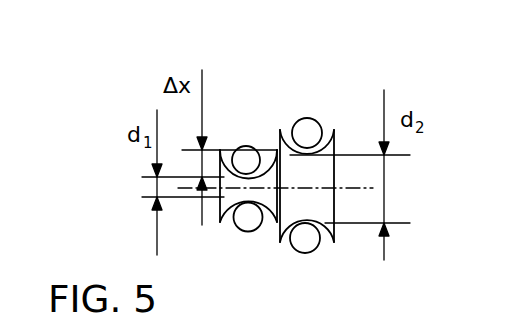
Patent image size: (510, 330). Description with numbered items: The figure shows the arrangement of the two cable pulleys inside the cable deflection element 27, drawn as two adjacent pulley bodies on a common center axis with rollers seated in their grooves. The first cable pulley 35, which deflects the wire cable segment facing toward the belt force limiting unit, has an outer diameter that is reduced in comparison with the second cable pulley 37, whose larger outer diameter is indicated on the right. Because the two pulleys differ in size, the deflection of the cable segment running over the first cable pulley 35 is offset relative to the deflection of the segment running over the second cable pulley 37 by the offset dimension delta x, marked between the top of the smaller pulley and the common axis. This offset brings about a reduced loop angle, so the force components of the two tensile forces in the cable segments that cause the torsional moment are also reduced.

The cable deflection element 27 is at (312, 63).
The first cable pulley 35 is at (268, 181).
The second cable pulley 37 is at (286, 163).